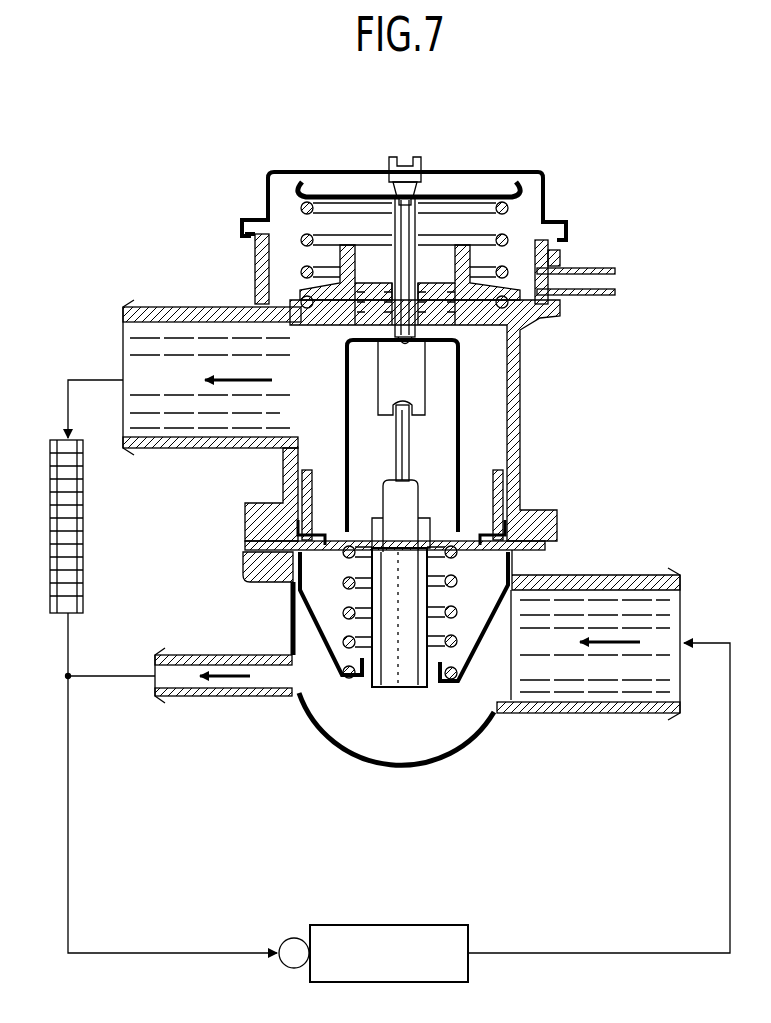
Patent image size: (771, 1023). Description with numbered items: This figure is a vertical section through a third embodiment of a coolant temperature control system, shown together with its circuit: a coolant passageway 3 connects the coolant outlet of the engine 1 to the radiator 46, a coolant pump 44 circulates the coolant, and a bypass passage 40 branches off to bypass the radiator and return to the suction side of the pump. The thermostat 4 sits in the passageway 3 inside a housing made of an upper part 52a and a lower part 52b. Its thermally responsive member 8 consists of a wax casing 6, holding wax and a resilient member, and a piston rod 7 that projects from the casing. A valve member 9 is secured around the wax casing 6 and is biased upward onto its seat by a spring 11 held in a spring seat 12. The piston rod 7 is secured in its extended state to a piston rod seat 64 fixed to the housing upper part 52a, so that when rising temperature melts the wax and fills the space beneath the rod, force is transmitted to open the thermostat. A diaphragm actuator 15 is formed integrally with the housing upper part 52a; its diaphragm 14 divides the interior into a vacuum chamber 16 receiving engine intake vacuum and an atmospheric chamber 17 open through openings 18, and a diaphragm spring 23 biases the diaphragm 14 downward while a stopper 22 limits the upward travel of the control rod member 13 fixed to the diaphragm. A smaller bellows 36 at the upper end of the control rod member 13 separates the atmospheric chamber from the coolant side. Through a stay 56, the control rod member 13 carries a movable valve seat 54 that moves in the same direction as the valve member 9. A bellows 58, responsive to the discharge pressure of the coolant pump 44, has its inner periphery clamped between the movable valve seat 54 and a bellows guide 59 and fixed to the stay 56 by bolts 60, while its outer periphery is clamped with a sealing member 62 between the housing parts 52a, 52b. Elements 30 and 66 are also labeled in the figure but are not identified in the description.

The engine 1 is at (441, 925).
The coolant passageway 3 is at (102, 380).
The thermostat 4 is at (493, 668).
The wax casing 6 is at (407, 683).
The piston rod 7 is at (408, 446).
The thermally responsive member 8 is at (385, 692).
The valve member 9 is at (424, 540).
The spring 11 is at (346, 652).
The spring seat 12 is at (312, 633).
The control rod member 13 is at (418, 225).
The diaphragm 14 is at (260, 236).
The diaphragm actuator 15 is at (287, 165).
The vacuum chamber 16 is at (270, 262).
The atmospheric chamber 17 is at (272, 190).
The openings 18 is at (358, 170).
The stopper 22 is at (413, 155).
The diaphragm spring 23 is at (300, 276).
The valve assembly 30 is at (540, 360).
The bellows 36 is at (352, 336).
The bypass passage 40 is at (184, 680).
The coolant pump 44 is at (286, 940).
The radiator 46 is at (52, 466).
The housing upper part 52a is at (514, 440).
The housing lower part 52b is at (470, 748).
The movable valve seat 54 is at (292, 570).
The stay 56 is at (462, 480).
The bellows 58 is at (292, 502).
The bellows guide 59 is at (309, 476).
The bolts 60 is at (300, 522).
The sealing member 62 is at (288, 548).
The piston rod seat 64 is at (418, 384).
The return spring 66 is at (336, 556).